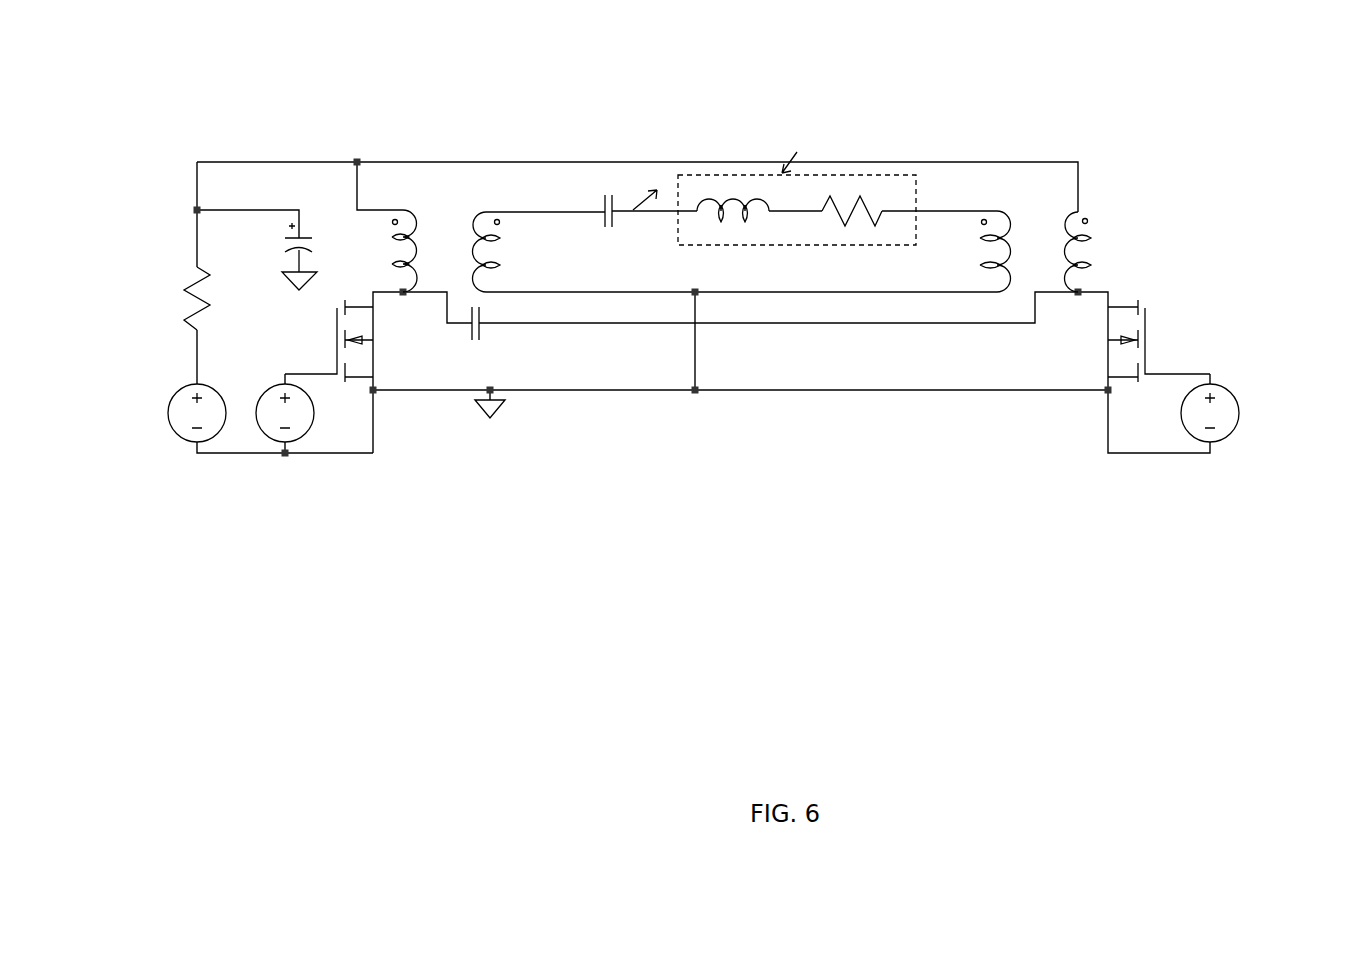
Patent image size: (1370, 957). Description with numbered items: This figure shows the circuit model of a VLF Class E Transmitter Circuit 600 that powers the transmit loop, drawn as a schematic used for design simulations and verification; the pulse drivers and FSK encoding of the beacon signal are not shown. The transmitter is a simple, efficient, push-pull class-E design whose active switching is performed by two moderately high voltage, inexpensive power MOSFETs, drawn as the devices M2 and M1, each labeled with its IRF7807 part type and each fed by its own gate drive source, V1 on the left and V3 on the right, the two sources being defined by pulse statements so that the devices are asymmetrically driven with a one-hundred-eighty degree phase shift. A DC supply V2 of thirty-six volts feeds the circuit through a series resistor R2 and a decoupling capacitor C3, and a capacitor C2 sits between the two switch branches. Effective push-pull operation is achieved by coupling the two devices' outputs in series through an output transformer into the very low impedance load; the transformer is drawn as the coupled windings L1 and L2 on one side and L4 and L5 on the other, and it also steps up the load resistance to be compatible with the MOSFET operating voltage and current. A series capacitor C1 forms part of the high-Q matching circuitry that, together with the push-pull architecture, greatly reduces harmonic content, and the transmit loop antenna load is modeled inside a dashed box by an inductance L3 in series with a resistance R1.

The VLF Class E Transmitter Circuit 600 is at (151, 50).
The source resistor 0.1 ohm R2 is at (215, 298).
The 36 V DC supply V2 is at (181, 437).
The 100 uF decoupling capacitor C3 is at (274, 248).
The 72 uH primary inductor L1 is at (371, 251).
The IRF7807 MOSFET switch M2 is at (363, 330).
The square wave gate drive source V1 is at (573, 424).
The .9374 uF capacitor C2 is at (474, 323).
The 3.5 uH secondary inductor L2 is at (517, 252).
The 0.2794 uF resonant capacitor C1 is at (611, 212).
The 403 uH loop antenna inductance L3 is at (733, 207).
The 0.47 ohm loop antenna resistance R1 is at (852, 208).
The 3.5 uH secondary inductor L5 is at (967, 251).
The 72 uH primary inductor L4 is at (1109, 252).
The IRF7807 MOSFET switch M1 is at (1123, 330).
The square wave gate drive source 180 degree phase shift V3 is at (973, 444).